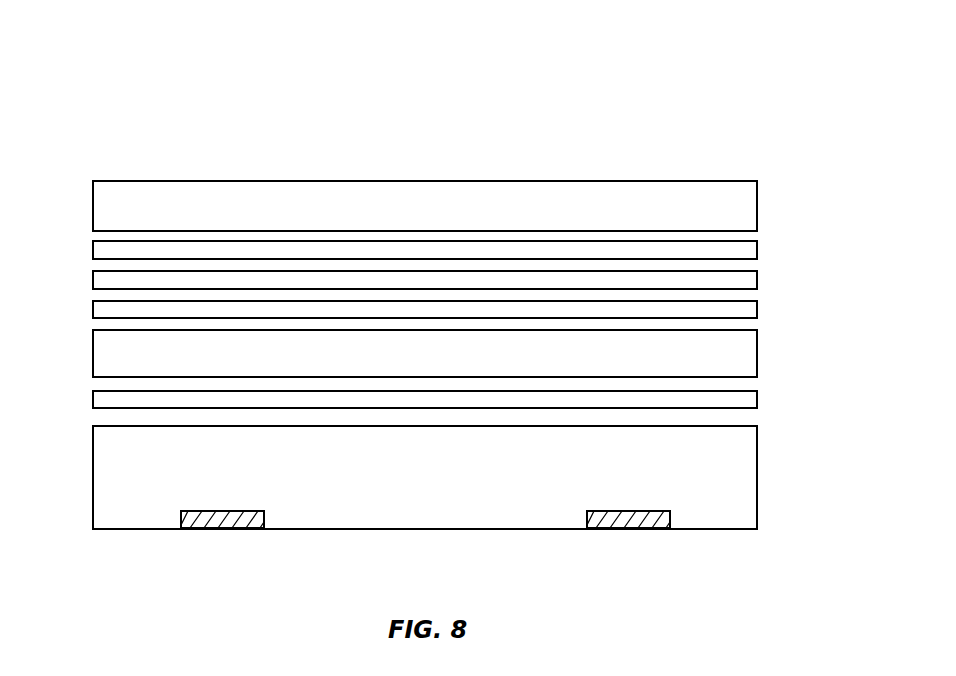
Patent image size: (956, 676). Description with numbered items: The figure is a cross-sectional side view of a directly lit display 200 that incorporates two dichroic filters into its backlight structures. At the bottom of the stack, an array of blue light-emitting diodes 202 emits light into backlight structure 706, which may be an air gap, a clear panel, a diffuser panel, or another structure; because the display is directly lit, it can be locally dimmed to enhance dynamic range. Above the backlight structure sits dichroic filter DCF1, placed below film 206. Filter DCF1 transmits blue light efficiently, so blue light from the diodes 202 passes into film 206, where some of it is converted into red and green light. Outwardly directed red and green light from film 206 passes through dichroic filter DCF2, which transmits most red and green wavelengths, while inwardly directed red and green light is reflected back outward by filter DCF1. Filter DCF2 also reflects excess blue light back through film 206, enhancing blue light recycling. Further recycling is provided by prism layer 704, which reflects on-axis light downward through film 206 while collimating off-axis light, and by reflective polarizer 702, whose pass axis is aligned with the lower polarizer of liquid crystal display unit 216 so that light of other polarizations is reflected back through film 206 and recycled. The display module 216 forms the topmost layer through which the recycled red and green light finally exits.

The display 200 is at (681, 81).
The display module 216 is at (93, 205).
The reflective polarizer 702 is at (757, 243).
The prism layer 704 is at (757, 273).
The dichroic filter DCF2 is at (757, 303).
The film 206 is at (757, 348).
The dichroic filter DCF1 is at (757, 393).
The backlight structure 706 is at (79, 426).
The light-emitting diodes 202 is at (264, 514).